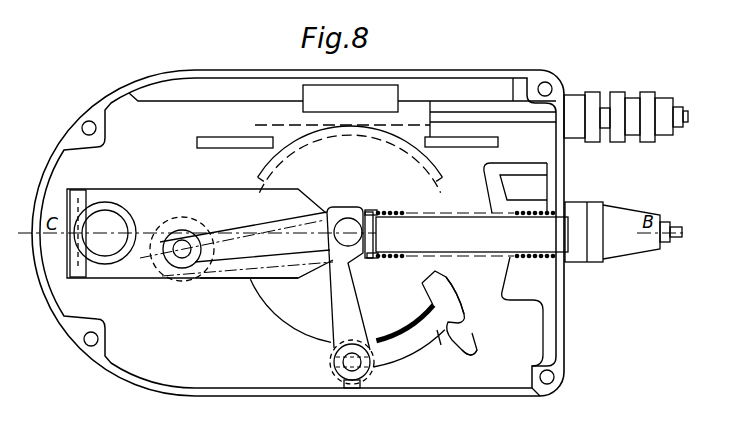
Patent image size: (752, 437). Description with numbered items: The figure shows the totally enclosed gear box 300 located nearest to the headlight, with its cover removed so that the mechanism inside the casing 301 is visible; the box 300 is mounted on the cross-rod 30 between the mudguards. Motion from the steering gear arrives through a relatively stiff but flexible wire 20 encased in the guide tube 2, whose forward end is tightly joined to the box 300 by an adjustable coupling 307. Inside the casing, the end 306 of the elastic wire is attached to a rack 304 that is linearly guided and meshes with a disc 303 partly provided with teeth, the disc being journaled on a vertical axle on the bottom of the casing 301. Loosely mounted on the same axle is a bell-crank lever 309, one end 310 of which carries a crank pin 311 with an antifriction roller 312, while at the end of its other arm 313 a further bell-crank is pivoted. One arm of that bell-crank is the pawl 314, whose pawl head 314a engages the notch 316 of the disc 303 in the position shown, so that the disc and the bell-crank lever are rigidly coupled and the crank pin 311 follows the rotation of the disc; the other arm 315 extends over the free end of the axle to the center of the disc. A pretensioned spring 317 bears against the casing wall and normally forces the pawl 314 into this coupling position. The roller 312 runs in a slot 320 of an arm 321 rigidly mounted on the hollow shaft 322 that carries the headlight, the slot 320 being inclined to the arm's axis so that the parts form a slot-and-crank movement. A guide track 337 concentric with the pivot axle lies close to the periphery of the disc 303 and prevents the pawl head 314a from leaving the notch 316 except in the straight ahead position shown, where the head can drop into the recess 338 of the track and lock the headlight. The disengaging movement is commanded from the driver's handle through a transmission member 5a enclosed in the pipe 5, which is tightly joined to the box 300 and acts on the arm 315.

The guide tube 2 is at (684, 106).
The pipe 5 is at (670, 214).
The transmission member 5a is at (684, 225).
The wire 20 is at (689, 116).
The cross-rod 30 is at (205, 99).
The box 300 is at (487, 77).
The casing 301 is at (532, 390).
The disc 303 is at (317, 257).
The rack 304 is at (413, 108).
The end of the elastic wire 306 is at (480, 116).
The adjustable coupling 307 is at (628, 100).
The bell-crank lever 309 is at (231, 271).
The end of bell-crank lever 310 is at (187, 262).
The crank pin 311 is at (178, 262).
The antifriction roller 312 is at (172, 268).
The arm 313 is at (328, 262).
The pawl 314 is at (437, 330).
The pawl head 314a is at (466, 323).
The arm 315 is at (377, 260).
The notch 316 is at (450, 257).
The pretensioned spring 317 is at (388, 210).
The slot 320 is at (140, 260).
The arm 321 is at (173, 188).
The hollow shaft 322 is at (107, 208).
The guide track 337 is at (441, 345).
The recess 338 is at (472, 352).